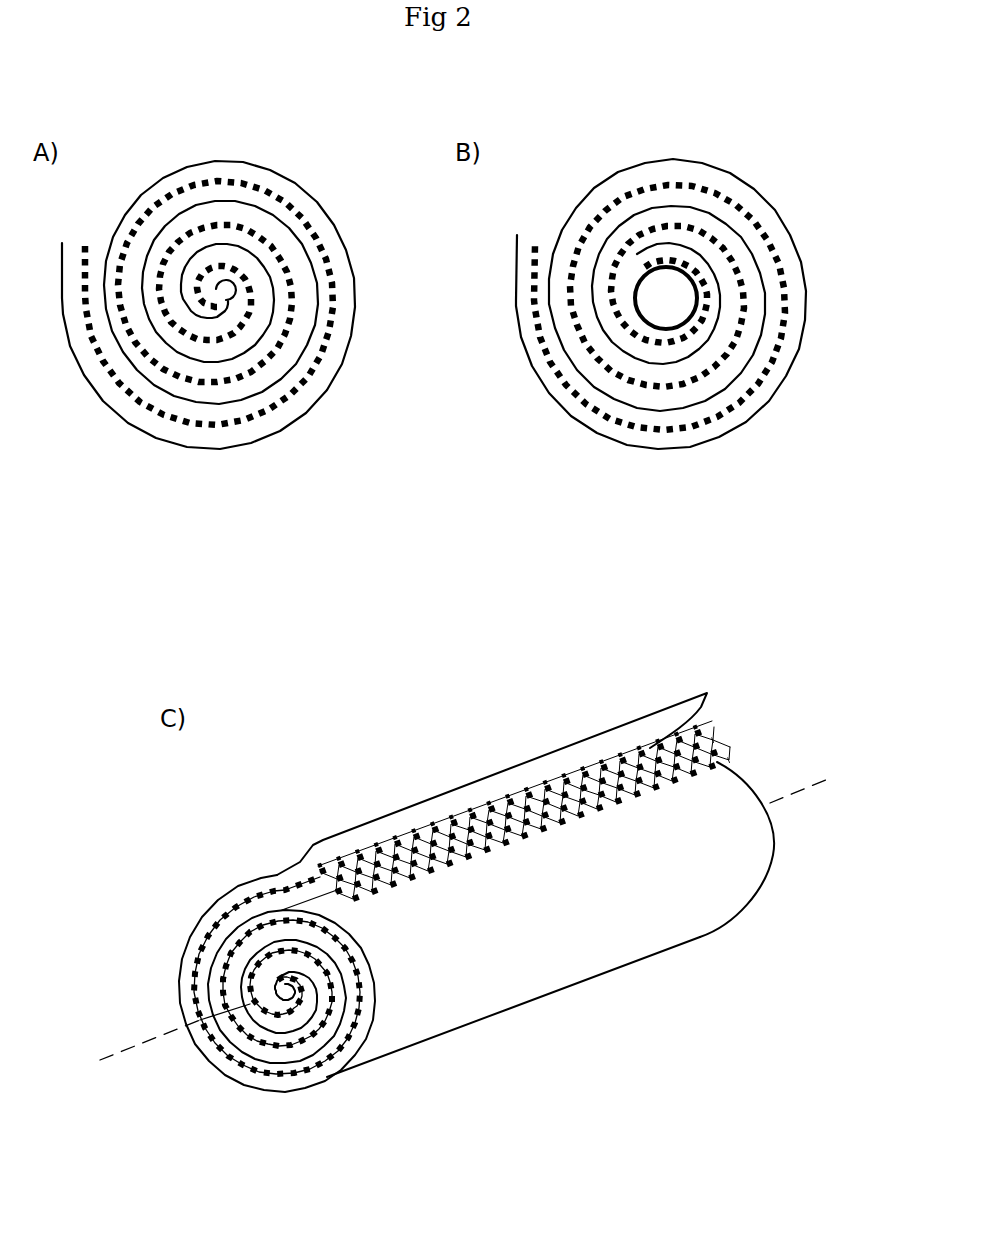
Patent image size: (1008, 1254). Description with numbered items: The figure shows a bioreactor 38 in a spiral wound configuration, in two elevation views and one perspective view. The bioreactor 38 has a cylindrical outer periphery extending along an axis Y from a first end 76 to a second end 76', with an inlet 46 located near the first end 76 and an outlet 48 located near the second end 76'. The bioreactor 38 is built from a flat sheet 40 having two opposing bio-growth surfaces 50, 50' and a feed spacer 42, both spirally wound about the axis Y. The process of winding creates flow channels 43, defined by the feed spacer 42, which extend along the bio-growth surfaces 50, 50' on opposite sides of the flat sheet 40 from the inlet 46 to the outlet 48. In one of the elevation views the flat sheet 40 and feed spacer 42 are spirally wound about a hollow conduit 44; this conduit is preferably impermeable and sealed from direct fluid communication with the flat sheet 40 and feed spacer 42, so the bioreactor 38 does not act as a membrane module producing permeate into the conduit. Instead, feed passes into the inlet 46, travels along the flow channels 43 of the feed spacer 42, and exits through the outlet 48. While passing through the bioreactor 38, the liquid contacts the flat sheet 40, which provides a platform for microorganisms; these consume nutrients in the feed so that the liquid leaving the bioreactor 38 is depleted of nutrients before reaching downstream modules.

In FIG. 2A, the bioreactor 38 is at (318, 148).
In FIG. 2B, the bioreactor 38 is at (818, 230).
In FIG. 2C, the bioreactor 38 is at (672, 676).
In FIG. 2A, the flat sheet 40 is at (330, 380).
In FIG. 2B, the flat sheet 40 is at (770, 402).
In FIG. 2C, the flat sheet 40 is at (558, 750).
In FIG. 2A, the feed spacer 42 is at (332, 282).
In FIG. 2B, the feed spacer 42 is at (783, 337).
In FIG. 2C, the feed spacer 42 is at (733, 737).
In FIG. 2A, the flow channels 43 is at (328, 337).
In FIG. 2B, the flow channels 43 is at (785, 302).
In FIG. 2B, the hollow conduit 44 is at (634, 294).
In FIG. 2C, the inlet 46 is at (190, 988).
In FIG. 2C, the outlet 48 is at (775, 830).
In FIG. 2A, the bio-growth surface 50 is at (233, 305).
In FIG. 2B, the bio-growth surface 50 is at (673, 301).
In FIG. 2A, the bio-growth surface 50' is at (218, 294).
In FIG. 2B, the bio-growth surface 50' is at (659, 276).
In FIG. 2C, the first end 76 is at (439, 988).
In FIG. 2C, the second end 76' is at (778, 849).